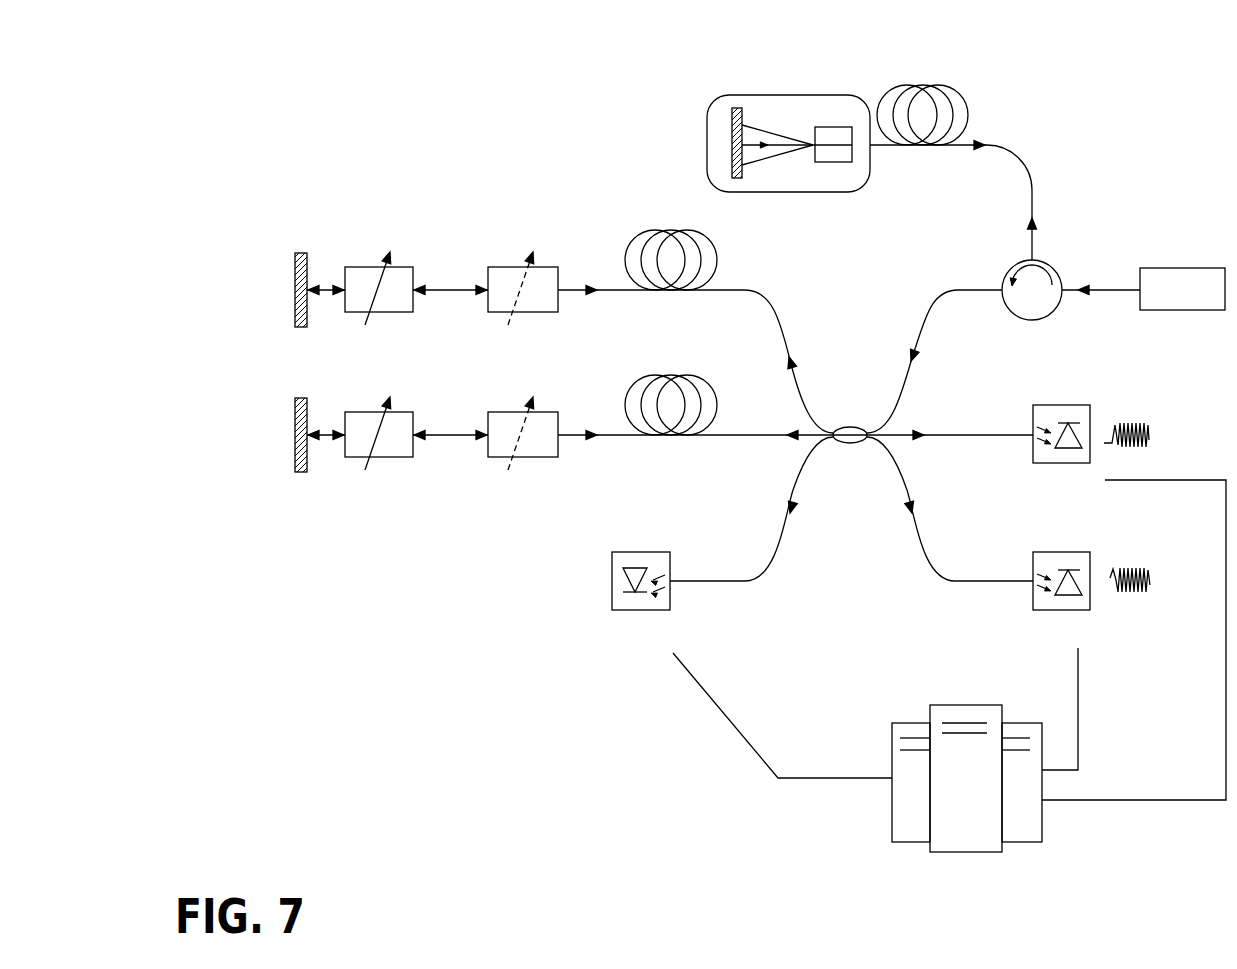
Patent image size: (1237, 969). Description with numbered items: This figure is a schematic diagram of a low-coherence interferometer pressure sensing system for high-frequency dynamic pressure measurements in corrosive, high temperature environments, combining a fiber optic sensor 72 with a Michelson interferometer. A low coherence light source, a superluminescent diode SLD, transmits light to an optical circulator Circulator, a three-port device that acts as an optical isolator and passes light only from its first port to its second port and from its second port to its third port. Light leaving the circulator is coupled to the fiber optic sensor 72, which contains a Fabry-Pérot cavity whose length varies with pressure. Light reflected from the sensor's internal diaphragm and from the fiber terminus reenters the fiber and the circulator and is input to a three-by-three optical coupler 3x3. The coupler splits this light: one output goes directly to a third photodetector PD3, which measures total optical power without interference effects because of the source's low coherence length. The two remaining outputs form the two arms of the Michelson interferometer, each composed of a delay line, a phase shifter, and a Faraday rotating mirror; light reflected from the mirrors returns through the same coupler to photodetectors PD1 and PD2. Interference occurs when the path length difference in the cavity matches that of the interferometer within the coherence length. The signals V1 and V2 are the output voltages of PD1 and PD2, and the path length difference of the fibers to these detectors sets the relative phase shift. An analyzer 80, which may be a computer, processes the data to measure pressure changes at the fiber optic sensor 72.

The fiber optic sensor 72 is at (778, 95).
The analyzer 80 is at (918, 722).
The 3×3 optical coupler 3x3 is at (852, 412).
The optical circulator Circulator is at (1027, 308).
The superluminescent diode SLD is at (1182, 289).
The first photodetector PD1 is at (1061, 449).
The second photodetector PD2 is at (1061, 597).
The third photodetector PD3 is at (641, 597).
The output voltage of PD1 V1 is at (1147, 437).
The output voltage of PD2 V2 is at (1150, 586).